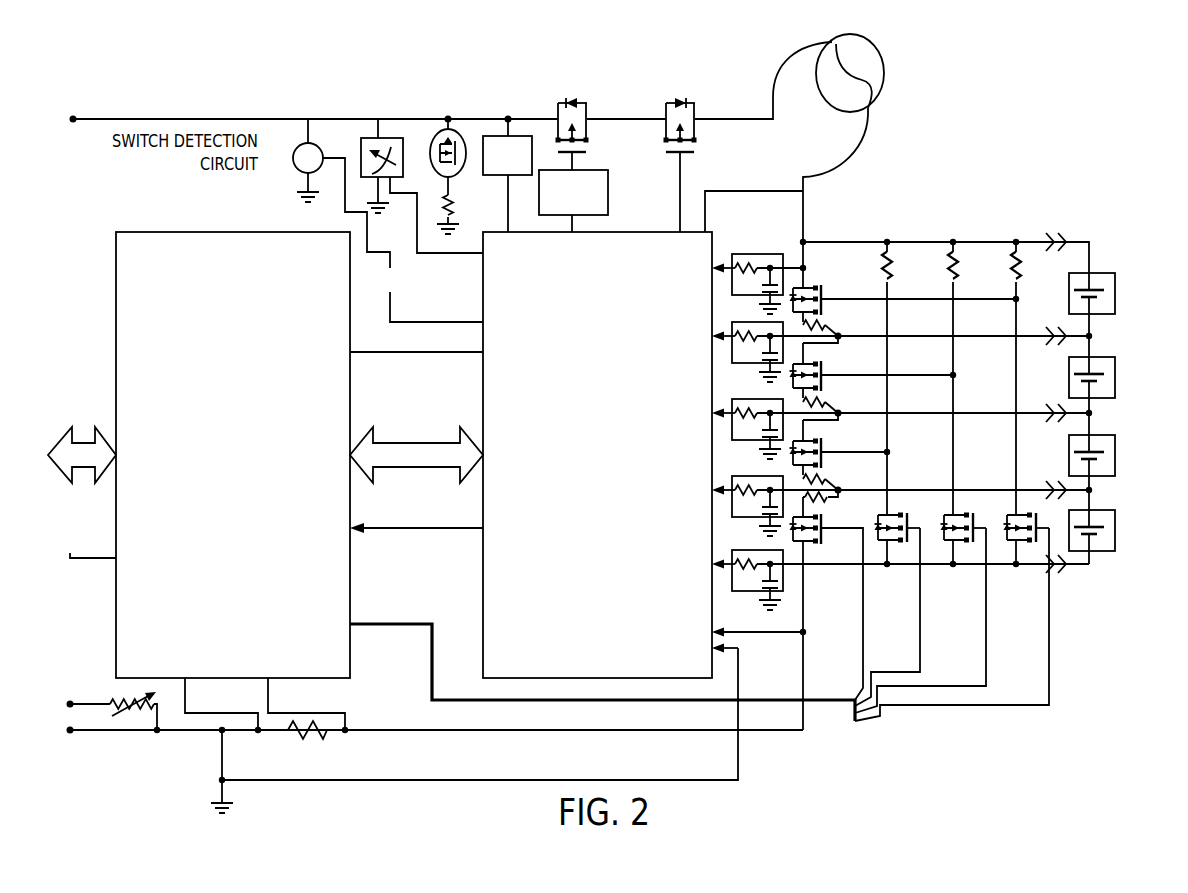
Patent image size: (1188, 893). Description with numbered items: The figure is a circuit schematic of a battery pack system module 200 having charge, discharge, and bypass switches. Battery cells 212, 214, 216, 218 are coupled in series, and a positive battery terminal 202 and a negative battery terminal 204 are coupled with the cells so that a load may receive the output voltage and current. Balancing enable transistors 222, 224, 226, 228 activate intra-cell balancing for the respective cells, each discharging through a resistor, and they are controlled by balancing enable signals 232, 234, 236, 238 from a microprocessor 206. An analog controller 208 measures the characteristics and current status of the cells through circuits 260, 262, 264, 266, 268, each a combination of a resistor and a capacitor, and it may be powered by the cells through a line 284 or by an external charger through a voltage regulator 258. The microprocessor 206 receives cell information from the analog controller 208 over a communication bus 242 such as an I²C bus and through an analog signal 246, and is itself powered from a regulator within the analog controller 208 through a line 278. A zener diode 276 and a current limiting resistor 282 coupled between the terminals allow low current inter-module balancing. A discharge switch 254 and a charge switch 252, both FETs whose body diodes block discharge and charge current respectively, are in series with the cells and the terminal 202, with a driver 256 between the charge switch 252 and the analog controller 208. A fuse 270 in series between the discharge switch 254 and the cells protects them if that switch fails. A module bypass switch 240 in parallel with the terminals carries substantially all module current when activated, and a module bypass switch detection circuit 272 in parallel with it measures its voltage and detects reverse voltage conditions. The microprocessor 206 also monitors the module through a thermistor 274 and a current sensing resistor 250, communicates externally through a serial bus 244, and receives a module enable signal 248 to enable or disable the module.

The battery pack system module 200 is at (266, 73).
The positive battery terminal 202 is at (76, 100).
The negative battery terminal 204 is at (78, 752).
The microprocessor 206 is at (380, 338).
The analog controller 208 is at (483, 284).
The battery cell 212 is at (1116, 282).
The battery cell 214 is at (1116, 366).
The battery cell 216 is at (1116, 444).
The battery cell 218 is at (1116, 519).
The balancing enable transistor 222 is at (1026, 545).
The balancing enable transistor 224 is at (963, 545).
The balancing enable transistor 226 is at (897, 545).
The balancing enable transistor 228 is at (824, 530).
The balancing enable signal 232 is at (1050, 618).
The balancing enable signal 234 is at (988, 616).
The balancing enable signal 236 is at (922, 612).
The balancing enable signal 238 is at (865, 604).
The module bypass switch 240 is at (382, 135).
The communication bus 242 is at (400, 443).
The bus 244 is at (80, 443).
The analog signal 246 is at (395, 532).
The module enable signal 248 is at (83, 562).
The current sensing resistor 250 is at (328, 734).
The charge switch 252 is at (565, 98).
The discharge switch 254 is at (691, 98).
The driver 256 is at (608, 186).
The voltage regulator 258 is at (490, 133).
The circuit 260 is at (776, 550).
The circuit 262 is at (776, 255).
The circuit 264 is at (776, 322).
The circuit 266 is at (776, 399).
The circuit 268 is at (776, 476).
The fuse 270 is at (884, 64).
The module bypass switch detection circuit 272 is at (292, 162).
The thermistor 274 is at (110, 700).
The zener diode 276 is at (453, 130).
The line 278 is at (372, 355).
The current limiting resistor 282 is at (456, 204).
The line 284 is at (742, 190).